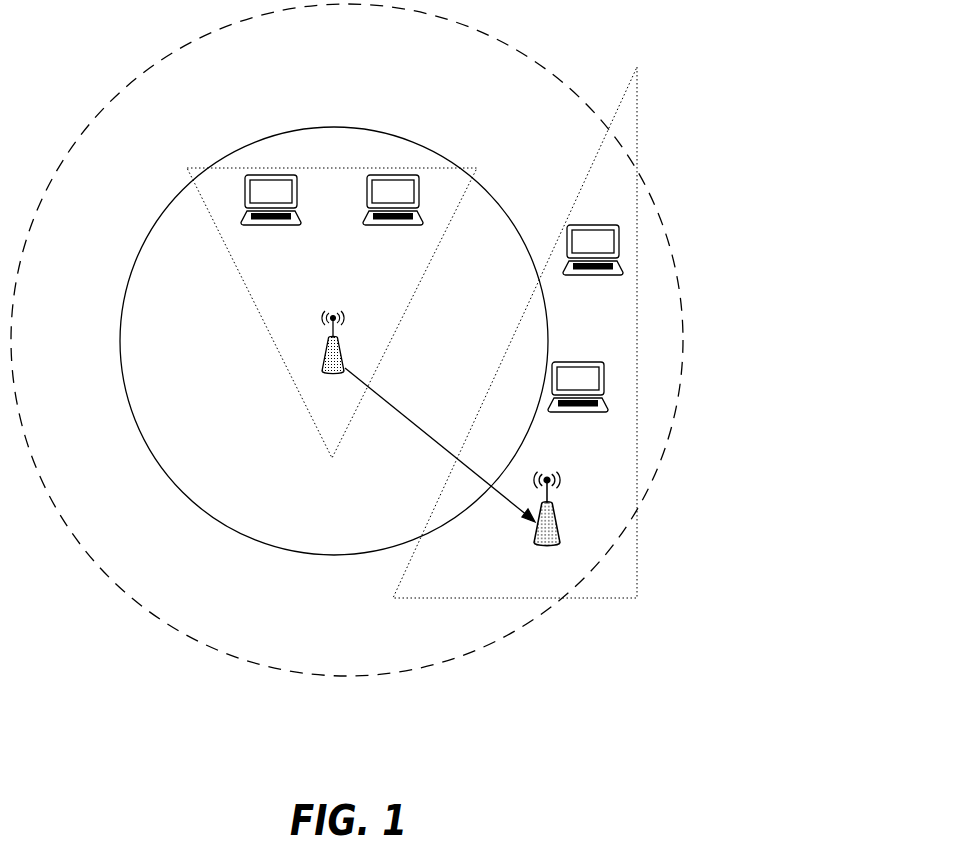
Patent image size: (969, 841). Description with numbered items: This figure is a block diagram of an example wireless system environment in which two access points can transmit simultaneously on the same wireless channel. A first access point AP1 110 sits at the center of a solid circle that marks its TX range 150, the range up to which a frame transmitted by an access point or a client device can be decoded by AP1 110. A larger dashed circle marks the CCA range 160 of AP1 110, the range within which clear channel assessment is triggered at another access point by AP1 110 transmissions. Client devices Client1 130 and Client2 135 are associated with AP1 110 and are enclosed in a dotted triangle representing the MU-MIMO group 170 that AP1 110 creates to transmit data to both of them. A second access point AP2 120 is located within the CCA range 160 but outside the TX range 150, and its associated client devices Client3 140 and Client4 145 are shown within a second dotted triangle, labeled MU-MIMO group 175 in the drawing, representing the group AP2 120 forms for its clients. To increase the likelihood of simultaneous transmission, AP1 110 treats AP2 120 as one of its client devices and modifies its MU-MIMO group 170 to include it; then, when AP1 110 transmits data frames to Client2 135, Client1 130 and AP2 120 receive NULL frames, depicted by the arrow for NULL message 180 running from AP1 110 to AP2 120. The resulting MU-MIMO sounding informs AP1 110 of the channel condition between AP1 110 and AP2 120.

The AP1 110 is at (321, 426).
The AP2 120 is at (521, 587).
The Client1 130 is at (259, 273).
The Client2 135 is at (381, 273).
The Client3 140 is at (581, 323).
The Client4 145 is at (566, 464).
The TX range 150 is at (321, 545).
The CCA range 160 is at (535, 708).
The MU-MIMO group 170 is at (307, 167).
The MU-MIMO group 2 175 is at (637, 142).
The NULL message 180 is at (421, 425).